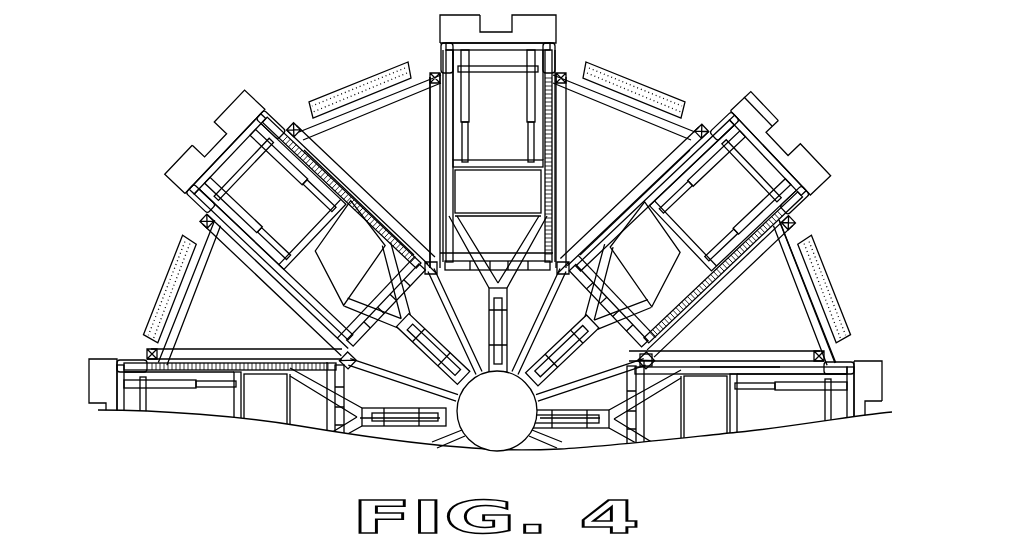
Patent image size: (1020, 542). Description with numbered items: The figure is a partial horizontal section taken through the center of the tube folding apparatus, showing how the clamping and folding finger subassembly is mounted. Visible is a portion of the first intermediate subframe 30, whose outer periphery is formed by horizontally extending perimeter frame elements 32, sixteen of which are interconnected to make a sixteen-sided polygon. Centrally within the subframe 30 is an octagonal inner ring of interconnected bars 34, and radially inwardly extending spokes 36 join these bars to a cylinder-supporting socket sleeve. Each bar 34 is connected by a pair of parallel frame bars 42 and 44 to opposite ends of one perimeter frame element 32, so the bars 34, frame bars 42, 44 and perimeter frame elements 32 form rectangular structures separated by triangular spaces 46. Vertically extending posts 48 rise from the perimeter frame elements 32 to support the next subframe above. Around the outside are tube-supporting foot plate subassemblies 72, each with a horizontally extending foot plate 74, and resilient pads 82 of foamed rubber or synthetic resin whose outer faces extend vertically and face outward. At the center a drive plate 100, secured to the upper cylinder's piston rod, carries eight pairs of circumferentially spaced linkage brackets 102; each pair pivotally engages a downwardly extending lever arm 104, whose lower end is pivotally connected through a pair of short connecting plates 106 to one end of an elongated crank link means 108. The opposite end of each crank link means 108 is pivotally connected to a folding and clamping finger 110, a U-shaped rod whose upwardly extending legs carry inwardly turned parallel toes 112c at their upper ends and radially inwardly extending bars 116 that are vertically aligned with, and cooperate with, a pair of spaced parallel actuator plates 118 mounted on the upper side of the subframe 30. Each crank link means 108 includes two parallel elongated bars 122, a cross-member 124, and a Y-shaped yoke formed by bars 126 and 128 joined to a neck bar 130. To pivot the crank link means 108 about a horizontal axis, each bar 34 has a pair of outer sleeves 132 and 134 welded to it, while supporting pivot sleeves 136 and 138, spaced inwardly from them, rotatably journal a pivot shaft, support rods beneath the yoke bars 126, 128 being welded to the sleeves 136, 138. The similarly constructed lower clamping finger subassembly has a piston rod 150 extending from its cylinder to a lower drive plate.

The first intermediate subframe 30 is at (815, 226).
The perimeter frame elements 32 is at (366, 104).
The bars 34 is at (438, 267).
The spokes 36 is at (462, 332).
The frame bar 42 is at (432, 138).
The frame bar 44 is at (560, 164).
The triangular spaces 46 is at (235, 322).
The vertically extending posts 48 is at (566, 75).
The tube-supporting foot plate subassemblies 72 is at (569, 18).
The foot plate 74 is at (187, 167).
The resilient pad 82 is at (363, 88).
The drive plate 100 is at (511, 421).
The linkage brackets 102 is at (445, 440).
The lever arm 104 is at (575, 395).
The connecting plates 106 is at (392, 384).
The crank link means 108 is at (741, 362).
The folding and clamping finger 110 is at (744, 93).
The toes 112c is at (443, 50).
The bars 116 is at (528, 100).
The actuator plates 118 is at (529, 142).
The parallel bars 122 is at (243, 238).
The cross-member 124 is at (512, 212).
The yoke bar 126 is at (539, 298).
The yoke bar 128 is at (553, 235).
The neck bar 130 is at (405, 333).
The outer sleeve 132 is at (362, 372).
The outer sleeve 134 is at (417, 233).
The supporting pivot sleeve 136 is at (603, 327).
The supporting pivot sleeve 138 is at (421, 299).
The piston rod 150 is at (556, 185).